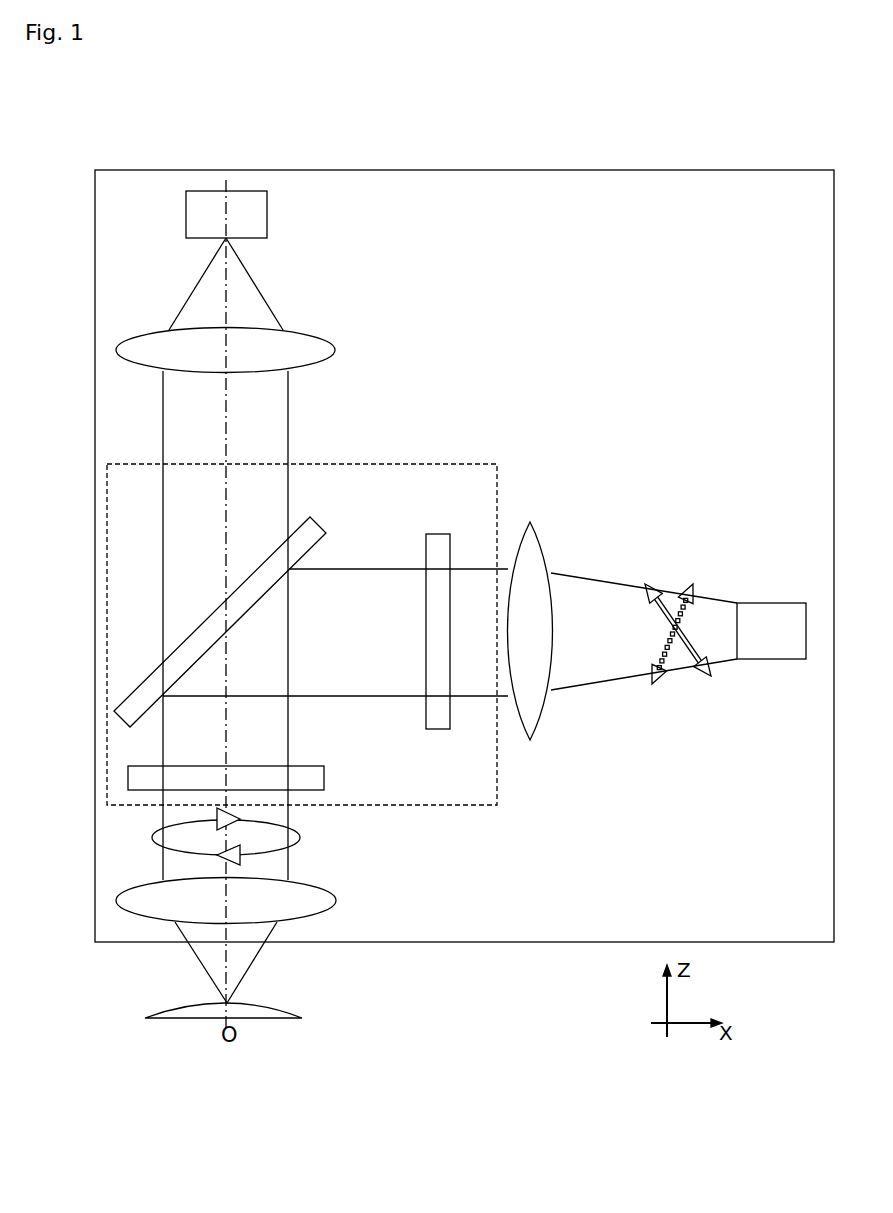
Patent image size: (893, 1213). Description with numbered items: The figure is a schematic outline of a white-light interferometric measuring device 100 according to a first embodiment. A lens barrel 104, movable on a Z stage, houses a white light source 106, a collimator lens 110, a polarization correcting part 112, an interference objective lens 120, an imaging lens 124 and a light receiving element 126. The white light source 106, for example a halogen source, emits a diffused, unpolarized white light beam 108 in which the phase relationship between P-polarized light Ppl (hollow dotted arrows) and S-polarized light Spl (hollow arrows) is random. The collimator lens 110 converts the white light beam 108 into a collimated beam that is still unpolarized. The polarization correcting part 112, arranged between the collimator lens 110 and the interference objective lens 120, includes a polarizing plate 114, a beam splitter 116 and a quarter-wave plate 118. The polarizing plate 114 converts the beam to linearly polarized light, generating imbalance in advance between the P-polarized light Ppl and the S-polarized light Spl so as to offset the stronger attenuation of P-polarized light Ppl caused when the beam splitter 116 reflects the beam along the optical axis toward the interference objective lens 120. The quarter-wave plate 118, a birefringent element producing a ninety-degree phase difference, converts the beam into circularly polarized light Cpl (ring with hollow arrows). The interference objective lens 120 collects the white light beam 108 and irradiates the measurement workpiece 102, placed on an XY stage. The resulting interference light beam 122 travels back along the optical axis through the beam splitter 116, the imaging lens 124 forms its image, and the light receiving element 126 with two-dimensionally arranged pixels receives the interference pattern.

The white-light interferometric measuring device 100 is at (441, 104).
The measurement workpiece 102 is at (295, 1015).
The lens barrel 104 is at (346, 170).
The white light source 106 is at (757, 602).
The white light beam 108 is at (592, 578).
The collimator lens 110 is at (530, 522).
The polarization correcting part 112 is at (382, 464).
The polarizing plate 114 is at (443, 538).
The beam splitter 116 is at (318, 522).
The quarter-wave plate 118 is at (313, 784).
The interference objective lens 120 is at (320, 900).
The interference light beam 122 is at (288, 408).
The imaging lens 124 is at (320, 346).
The light receiving element 126 is at (260, 212).
The P-polarized light Ppl is at (673, 646).
The S-polarized light Spl is at (692, 646).
The circularly polarized light Cpl is at (242, 836).